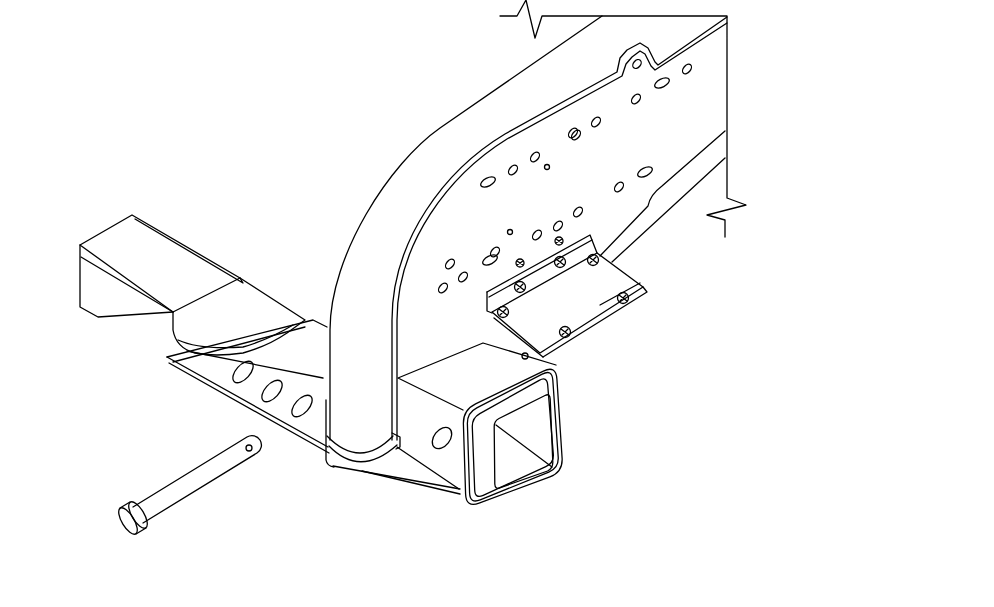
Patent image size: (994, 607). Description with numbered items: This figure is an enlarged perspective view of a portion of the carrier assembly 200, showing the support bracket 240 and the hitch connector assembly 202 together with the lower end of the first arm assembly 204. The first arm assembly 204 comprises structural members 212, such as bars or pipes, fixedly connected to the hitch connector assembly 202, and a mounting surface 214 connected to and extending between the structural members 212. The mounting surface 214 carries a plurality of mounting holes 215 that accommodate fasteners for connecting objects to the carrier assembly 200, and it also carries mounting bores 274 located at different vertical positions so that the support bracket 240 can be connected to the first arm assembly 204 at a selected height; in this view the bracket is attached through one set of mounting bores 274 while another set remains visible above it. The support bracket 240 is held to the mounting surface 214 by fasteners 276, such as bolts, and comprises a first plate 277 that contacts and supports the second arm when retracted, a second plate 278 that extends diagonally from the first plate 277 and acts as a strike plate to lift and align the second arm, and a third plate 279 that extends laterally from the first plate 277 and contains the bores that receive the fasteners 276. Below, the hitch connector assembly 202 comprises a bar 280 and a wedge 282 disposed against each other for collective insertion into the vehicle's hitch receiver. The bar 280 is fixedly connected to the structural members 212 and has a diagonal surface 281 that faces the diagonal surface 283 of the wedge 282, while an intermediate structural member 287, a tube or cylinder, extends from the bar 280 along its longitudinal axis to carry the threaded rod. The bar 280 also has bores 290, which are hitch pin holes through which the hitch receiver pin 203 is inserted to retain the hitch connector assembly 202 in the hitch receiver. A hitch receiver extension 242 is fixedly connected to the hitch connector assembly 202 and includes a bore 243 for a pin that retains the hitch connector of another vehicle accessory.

The carrier assembly 200 is at (140, 48).
The hitch connector assembly 202 is at (140, 186).
The hitch receiver pin 203 is at (215, 482).
The first arm assembly 204 is at (378, 227).
The structural members 212 is at (445, 241).
The mounting surfaces 214 is at (462, 209).
The mounting holes 215 is at (534, 154).
The support bracket 240 is at (606, 306).
The hitch receiver extension 242 is at (500, 431).
The bore 243 is at (436, 447).
The mounting bores 274 is at (521, 258).
The fasteners 276 is at (564, 266).
The first plate 277 is at (618, 272).
The second plate 278 is at (610, 310).
The third plate 279 is at (497, 278).
The bar 280 is at (292, 373).
The diagonal surface 281 is at (301, 319).
The wedge 282 is at (181, 243).
The diagonal surface 283 is at (121, 318).
The intermediate structural member 287 is at (242, 313).
The bores 290 is at (237, 383).